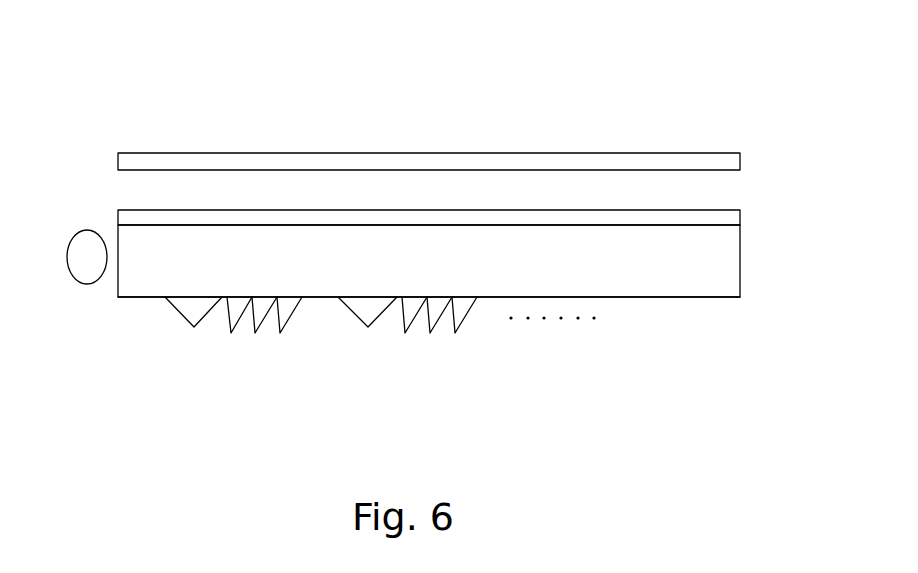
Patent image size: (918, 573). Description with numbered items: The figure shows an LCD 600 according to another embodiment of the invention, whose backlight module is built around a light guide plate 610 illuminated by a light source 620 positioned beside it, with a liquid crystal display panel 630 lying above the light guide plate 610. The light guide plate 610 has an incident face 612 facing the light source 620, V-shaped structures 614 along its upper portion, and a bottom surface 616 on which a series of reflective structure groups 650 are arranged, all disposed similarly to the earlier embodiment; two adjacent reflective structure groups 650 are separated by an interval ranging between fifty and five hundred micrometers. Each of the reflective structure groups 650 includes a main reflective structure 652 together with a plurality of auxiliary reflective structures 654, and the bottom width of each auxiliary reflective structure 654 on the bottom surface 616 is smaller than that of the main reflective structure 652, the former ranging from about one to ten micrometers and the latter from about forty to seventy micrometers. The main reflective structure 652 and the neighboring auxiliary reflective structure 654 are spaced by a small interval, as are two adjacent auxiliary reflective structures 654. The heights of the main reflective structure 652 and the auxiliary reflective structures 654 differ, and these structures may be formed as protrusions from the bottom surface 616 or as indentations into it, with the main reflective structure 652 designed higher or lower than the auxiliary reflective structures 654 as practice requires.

The LCD 600 is at (27, 28).
The light guide plate 610 is at (476, 277).
The incident face 612 is at (119, 263).
The V-shaped structures 614 is at (235, 219).
The bottom surface 616 is at (705, 297).
The light source 620 is at (88, 283).
The liquid crystal display panel 630 is at (212, 153).
The reflective structure groups 650 is at (285, 324).
The main reflective structure 652 is at (173, 317).
The auxiliary reflective structures 654 is at (237, 300).